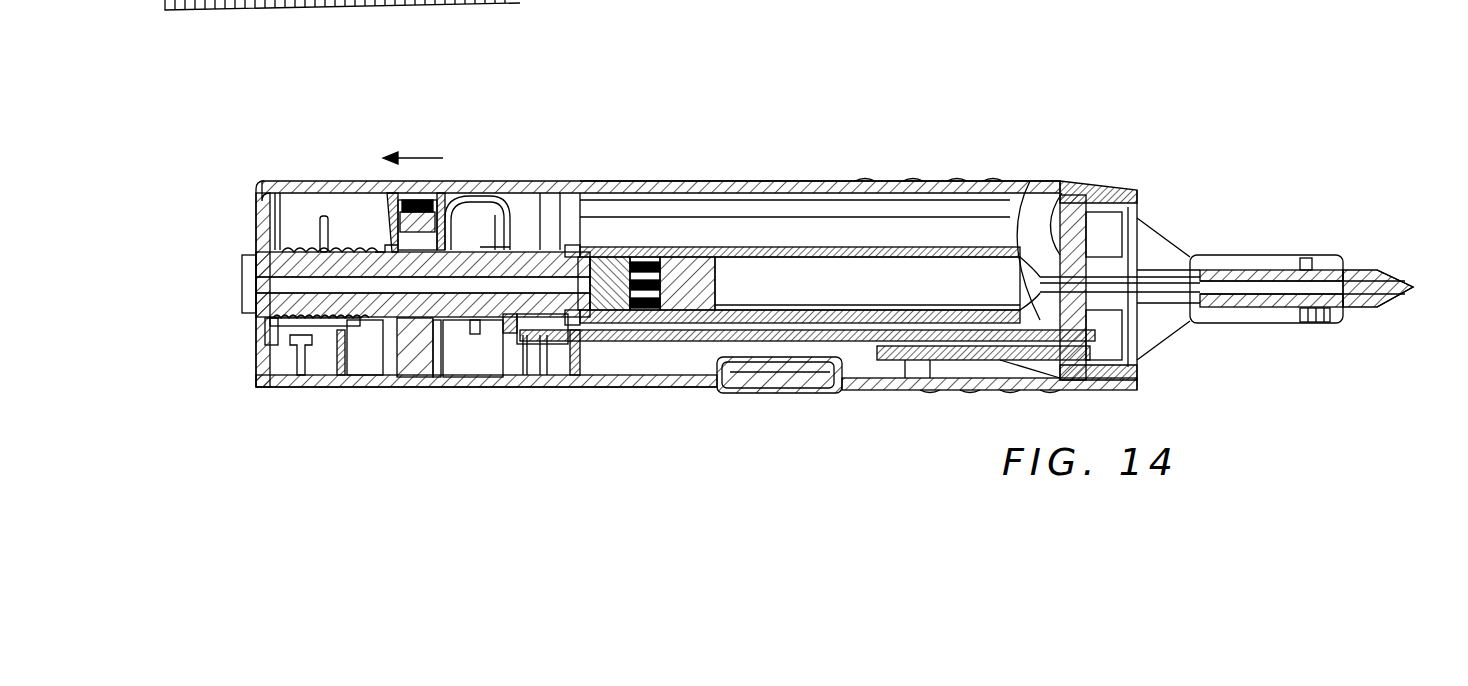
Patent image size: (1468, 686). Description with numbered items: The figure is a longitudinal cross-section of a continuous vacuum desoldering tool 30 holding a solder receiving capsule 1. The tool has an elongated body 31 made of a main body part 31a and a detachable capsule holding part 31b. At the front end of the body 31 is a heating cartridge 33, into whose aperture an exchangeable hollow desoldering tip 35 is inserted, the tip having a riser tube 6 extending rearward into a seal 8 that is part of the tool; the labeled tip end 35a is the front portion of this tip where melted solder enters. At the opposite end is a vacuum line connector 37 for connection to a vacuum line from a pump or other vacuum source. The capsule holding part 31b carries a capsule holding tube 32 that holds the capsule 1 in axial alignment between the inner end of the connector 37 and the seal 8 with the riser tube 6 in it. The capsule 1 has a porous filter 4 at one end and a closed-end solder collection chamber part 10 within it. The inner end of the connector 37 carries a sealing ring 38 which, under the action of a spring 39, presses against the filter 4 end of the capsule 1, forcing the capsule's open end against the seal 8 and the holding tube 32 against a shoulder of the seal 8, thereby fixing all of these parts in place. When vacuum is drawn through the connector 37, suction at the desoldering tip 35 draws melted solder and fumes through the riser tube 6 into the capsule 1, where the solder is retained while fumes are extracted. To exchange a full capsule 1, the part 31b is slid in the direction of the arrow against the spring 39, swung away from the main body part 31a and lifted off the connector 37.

The solder receiving capsule 1 is at (872, 300).
The porous filter 4 is at (612, 257).
The riser tube 6 is at (1018, 181).
The seal 8 is at (1070, 190).
The solder collection chamber part 10 is at (668, 257).
The desoldering tool 30 is at (918, 133).
The elongated body 31 is at (752, 390).
The main body part 31a is at (490, 388).
The capsule holding part 31b is at (716, 181).
The capsule holding tube 32 is at (833, 247).
The heating cartridge 33 is at (1278, 255).
The desoldering tip 35 is at (1383, 272).
The needle tip 35a is at (1416, 297).
The vacuum line connector 37 is at (256, 252).
The sealing ring 38 is at (570, 248).
The spring 39 is at (300, 250).